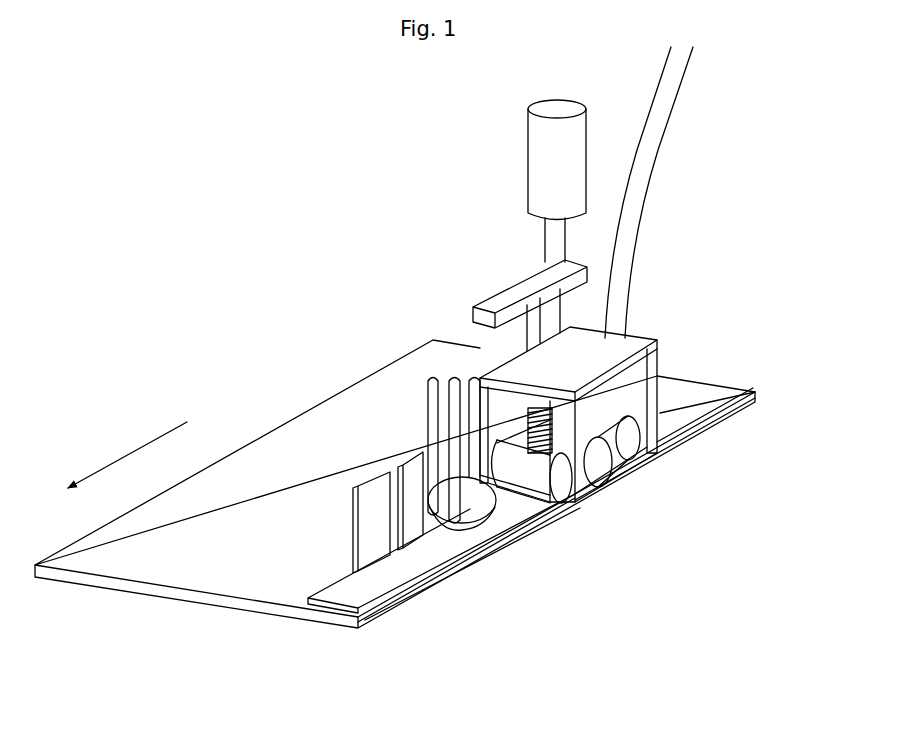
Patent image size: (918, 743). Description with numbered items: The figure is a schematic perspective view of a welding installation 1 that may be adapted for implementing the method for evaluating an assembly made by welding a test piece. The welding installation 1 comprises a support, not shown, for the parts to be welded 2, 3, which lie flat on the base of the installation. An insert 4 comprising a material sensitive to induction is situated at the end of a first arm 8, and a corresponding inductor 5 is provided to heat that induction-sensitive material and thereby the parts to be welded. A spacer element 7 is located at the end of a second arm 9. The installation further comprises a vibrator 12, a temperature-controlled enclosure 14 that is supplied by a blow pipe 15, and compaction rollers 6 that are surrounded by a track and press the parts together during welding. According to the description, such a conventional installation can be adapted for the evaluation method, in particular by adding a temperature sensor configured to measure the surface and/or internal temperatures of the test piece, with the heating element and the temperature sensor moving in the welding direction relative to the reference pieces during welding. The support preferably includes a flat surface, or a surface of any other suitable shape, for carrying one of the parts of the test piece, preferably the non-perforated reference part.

The welding installation 1 is at (754, 137).
The part to be welded 2 is at (713, 401).
The part to be welded 3 is at (714, 434).
The insert 4 is at (485, 554).
The inductor 5 is at (497, 511).
The compaction rollers 6 is at (604, 467).
The spacer element 7 is at (424, 595).
The first arm 8 is at (399, 457).
The second arm 9 is at (354, 482).
The vibrator 12 is at (527, 417).
The temperature-controlled enclosure 14 is at (663, 375).
The blow pipe 15 is at (645, 244).